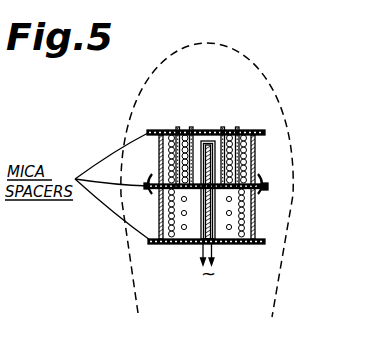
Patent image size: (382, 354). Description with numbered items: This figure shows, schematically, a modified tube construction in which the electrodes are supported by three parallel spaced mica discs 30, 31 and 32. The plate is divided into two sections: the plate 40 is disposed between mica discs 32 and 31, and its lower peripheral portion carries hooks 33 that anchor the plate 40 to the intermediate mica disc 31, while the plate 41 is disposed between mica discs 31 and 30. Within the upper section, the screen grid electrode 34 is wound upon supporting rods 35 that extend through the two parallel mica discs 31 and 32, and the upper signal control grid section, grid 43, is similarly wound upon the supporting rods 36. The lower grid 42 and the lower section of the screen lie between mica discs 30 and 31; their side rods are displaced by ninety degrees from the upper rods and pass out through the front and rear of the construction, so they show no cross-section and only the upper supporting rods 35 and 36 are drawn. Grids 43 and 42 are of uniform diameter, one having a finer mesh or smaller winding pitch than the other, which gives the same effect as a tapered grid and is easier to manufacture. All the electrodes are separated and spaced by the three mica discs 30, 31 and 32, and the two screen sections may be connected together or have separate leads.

The mica disc 30 is at (156, 242).
The intermediate mica disc 31 is at (268, 189).
The mica disc 32 is at (148, 132).
The hooks 33 is at (259, 177).
The screen grid electrode 34 is at (165, 245).
The supporting rods 35 is at (176, 128).
The supporting rods 36 is at (225, 128).
The plate 40 is at (254, 145).
The plate 41 is at (254, 224).
The grid 42 is at (181, 244).
The grid 43 is at (182, 128).